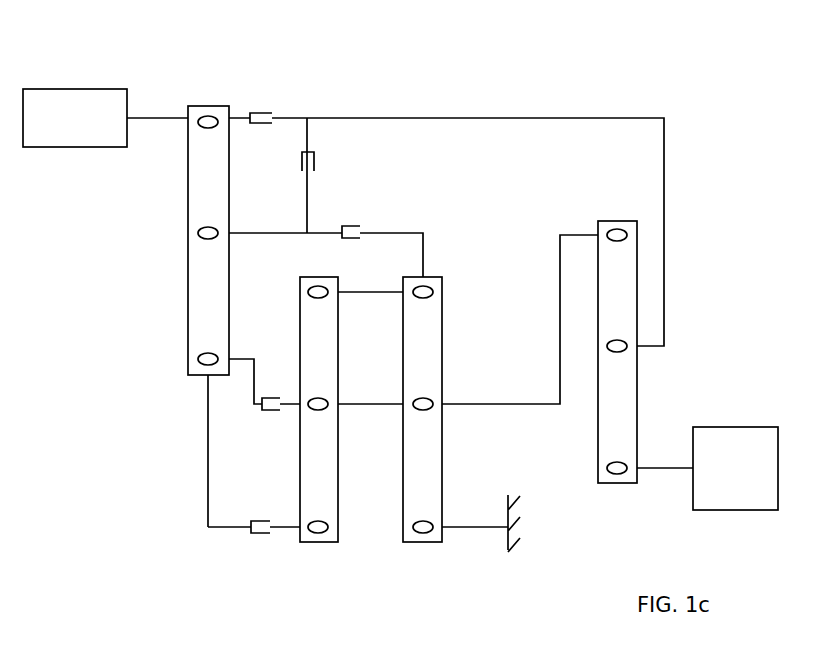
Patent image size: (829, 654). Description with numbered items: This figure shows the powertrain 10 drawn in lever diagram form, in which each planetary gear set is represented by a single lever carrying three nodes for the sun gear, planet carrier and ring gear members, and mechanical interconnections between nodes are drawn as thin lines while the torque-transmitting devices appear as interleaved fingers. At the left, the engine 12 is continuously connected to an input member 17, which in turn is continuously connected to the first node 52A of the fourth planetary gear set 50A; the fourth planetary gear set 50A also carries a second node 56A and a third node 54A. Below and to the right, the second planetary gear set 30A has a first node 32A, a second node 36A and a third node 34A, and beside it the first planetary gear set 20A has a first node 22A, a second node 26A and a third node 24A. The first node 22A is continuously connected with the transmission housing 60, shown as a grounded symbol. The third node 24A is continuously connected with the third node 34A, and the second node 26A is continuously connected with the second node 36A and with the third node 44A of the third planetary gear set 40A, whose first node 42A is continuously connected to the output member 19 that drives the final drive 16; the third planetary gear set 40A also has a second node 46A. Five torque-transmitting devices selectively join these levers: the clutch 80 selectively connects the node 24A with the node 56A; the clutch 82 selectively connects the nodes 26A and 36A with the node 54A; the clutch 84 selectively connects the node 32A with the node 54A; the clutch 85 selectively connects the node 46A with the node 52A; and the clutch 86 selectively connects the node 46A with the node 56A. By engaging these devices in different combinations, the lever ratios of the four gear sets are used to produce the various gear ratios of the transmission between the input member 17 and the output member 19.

The powertrain 10 is at (432, 86).
The engine 12 is at (100, 76).
The final drive 16 is at (722, 421).
The input member 17 is at (165, 118).
The output member 19 is at (657, 468).
The first planetary gear set 20A is at (435, 550).
The first node 22A is at (433, 525).
The third node 24A is at (433, 292).
The second node 26A is at (433, 404).
The second planetary gear set 30A is at (326, 550).
The first node 32A is at (328, 527).
The third node 34A is at (308, 292).
The second node 36A is at (328, 404).
The third planetary gear set 40A is at (621, 216).
The first node 42A is at (608, 470).
The third node 44A is at (627, 235).
The second node 46A is at (625, 348).
The fourth planetary gear set 50A is at (207, 93).
The first node 52A is at (198, 122).
The third node 54A is at (198, 359).
The second node 56A is at (198, 234).
The transmission housing 60 is at (521, 517).
The clutch 80 is at (356, 222).
The clutch 82 is at (272, 393).
The clutch 84 is at (269, 516).
The clutch 85 is at (264, 100).
The clutch 86 is at (322, 170).